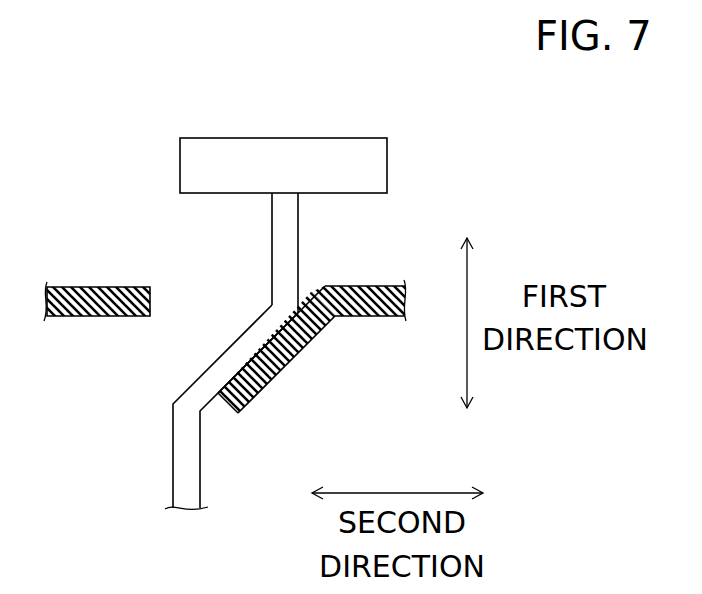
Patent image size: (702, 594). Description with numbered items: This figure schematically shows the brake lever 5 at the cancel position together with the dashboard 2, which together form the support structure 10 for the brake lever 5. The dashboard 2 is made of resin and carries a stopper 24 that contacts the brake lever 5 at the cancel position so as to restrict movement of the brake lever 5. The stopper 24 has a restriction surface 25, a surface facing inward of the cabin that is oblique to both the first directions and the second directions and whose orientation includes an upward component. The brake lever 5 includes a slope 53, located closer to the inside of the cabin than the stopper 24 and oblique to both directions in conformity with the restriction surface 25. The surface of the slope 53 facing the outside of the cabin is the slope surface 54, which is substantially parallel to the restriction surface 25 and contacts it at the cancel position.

The support structure 10 is at (110, 148).
The dashboard 2 is at (105, 287).
The brake lever 5 is at (272, 263).
The restriction surface 25 is at (310, 301).
The stopper 24 is at (283, 369).
The slope 53 is at (221, 356).
The slope surface 54 is at (236, 412).